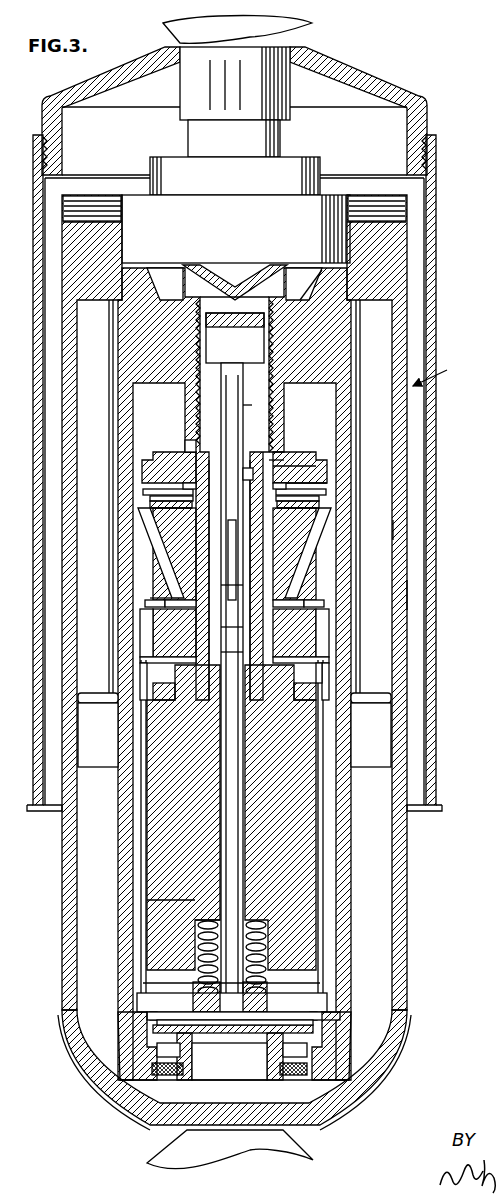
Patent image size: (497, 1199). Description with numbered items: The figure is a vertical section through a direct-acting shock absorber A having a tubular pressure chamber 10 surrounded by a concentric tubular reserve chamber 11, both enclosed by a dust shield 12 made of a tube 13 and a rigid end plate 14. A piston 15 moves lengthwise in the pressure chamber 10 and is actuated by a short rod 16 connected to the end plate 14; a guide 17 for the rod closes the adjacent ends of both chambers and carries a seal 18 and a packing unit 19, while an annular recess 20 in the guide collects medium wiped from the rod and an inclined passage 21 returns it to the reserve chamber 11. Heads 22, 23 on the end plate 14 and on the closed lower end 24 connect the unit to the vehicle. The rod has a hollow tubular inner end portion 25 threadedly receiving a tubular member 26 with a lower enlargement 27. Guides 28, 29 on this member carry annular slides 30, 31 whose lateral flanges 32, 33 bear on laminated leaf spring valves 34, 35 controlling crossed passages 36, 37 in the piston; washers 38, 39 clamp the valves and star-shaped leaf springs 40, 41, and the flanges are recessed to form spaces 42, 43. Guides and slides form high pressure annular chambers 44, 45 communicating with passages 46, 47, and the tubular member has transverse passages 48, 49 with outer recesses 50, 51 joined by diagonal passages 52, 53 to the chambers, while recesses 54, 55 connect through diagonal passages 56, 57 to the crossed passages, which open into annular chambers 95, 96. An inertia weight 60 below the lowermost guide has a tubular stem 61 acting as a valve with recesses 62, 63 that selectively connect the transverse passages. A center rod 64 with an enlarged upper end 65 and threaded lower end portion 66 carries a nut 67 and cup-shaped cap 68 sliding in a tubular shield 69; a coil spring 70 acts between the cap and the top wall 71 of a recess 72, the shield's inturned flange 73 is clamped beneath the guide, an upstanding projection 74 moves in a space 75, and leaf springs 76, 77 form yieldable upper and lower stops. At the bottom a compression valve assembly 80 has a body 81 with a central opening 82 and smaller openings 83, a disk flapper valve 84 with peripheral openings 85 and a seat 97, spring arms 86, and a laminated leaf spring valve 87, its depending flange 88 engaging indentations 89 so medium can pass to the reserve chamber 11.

The tubular pressure chamber 10 is at (325, 845).
The tubular reserve chamber 11 is at (399, 892).
The dust shield 12 is at (437, 548).
The tube 13 is at (435, 278).
The end plate 14 is at (428, 108).
The piston 15 is at (398, 527).
The rod 16 is at (277, 268).
The guide 17 is at (400, 247).
The seal 18 is at (338, 205).
The packing unit 19 is at (316, 163).
The annular recess 20 is at (298, 270).
The inclined passage 21 is at (316, 286).
The head 22 is at (300, 28).
The head 23 is at (293, 1152).
The closed lower end 24 is at (313, 1120).
The tubular inner end portion 25 is at (265, 430).
The tubular member 26 is at (235, 404).
The enlargement 27 is at (352, 675).
The guide 28 is at (320, 455).
The guide 29 is at (322, 630).
The annular slide 30 is at (320, 480).
The annular slide 31 is at (325, 604).
The lateral flange 32 is at (322, 500).
The lateral flange 33 is at (405, 594).
The laminated leaf spring valve 34 is at (155, 506).
The laminated leaf spring valve 35 is at (150, 604).
The crossed passages 36 is at (226, 562).
The crossed passages 37 is at (320, 556).
The washer 38 is at (150, 480).
The washer 39 is at (158, 618).
The star-shaped leaf spring 40 is at (320, 491).
The star-shaped leaf spring 41 is at (318, 615).
The space 42 is at (320, 507).
The space 43 is at (310, 598).
The high pressure annular chamber 44 is at (150, 491).
The high pressure annular chamber 45 is at (153, 637).
The passage 46 is at (160, 499).
The passage 47 is at (160, 605).
The transverse passages 48 is at (196, 448).
The transverse passages 49 is at (190, 487).
The recess 50 is at (270, 465).
The recess 51 is at (140, 660).
The passage 52 is at (280, 495).
The passage 53 is at (329, 652).
The recess 54 is at (325, 468).
The recess 55 is at (232, 621).
The passage 56 is at (322, 515).
The passage 57 is at (231, 577).
The inertia weight 60 is at (300, 883).
The tubular stem 61 is at (256, 428).
The recess 62 is at (260, 478).
The recess 63 is at (232, 647).
The center rod 64 is at (300, 900).
The enlarged upper end 65 is at (235, 338).
The threaded lower end portion 66 is at (270, 945).
The nut 67 is at (327, 997).
The cup-shaped cap 68 is at (317, 987).
The tubular shield 69 is at (322, 858).
The coil spring 70 is at (350, 930).
The top wall 71 is at (157, 900).
The recess 72 is at (197, 943).
The inturned flange 73 is at (152, 662).
The upstanding projection 74 is at (332, 688).
The space 75 is at (360, 681).
The leaf spring 76 is at (347, 669).
The leaf spring 77 is at (293, 983).
The compression valve assembly 80 is at (360, 1020).
The body 81 is at (347, 1050).
The central opening 82 is at (243, 1062).
The smaller openings 83 is at (360, 1027).
The disk flapper valve 84 is at (228, 1034).
The peripheral openings 85 is at (357, 1013).
The spring arms 86 is at (360, 1010).
The laminated leaf spring valve 87 is at (353, 1100).
The depending flange 88 is at (347, 1063).
The indentations 89 is at (360, 1073).
The annular chamber 95 is at (165, 522).
The annular chamber 96 is at (160, 598).
The seat 97 is at (160, 1047).
The shock absorber A is at (437, 370).